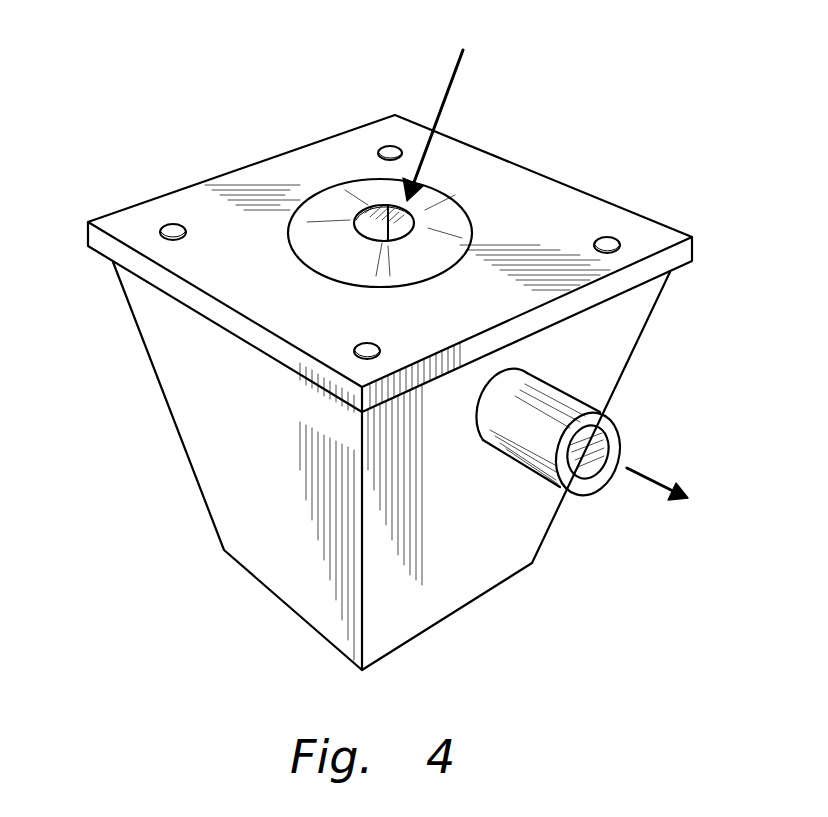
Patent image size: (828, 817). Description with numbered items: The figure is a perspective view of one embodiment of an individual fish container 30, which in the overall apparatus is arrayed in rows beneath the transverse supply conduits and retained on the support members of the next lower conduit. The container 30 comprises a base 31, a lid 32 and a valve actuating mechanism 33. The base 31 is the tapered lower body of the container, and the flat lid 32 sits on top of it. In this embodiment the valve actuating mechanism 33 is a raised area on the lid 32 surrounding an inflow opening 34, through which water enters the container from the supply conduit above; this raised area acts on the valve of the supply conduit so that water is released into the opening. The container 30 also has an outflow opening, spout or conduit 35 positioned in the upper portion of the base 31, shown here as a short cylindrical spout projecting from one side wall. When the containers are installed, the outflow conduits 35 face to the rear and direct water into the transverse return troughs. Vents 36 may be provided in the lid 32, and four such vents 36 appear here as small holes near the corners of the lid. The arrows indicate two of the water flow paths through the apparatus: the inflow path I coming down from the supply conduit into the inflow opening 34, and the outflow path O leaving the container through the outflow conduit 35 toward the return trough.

The individual fish container 30 is at (136, 400).
The base 31 is at (445, 599).
The lid 32 is at (557, 208).
The valve actuating mechanism 33 is at (438, 212).
The inflow opening 34 is at (374, 206).
The outflow opening, spout or conduit 35 is at (583, 485).
The vents 36 is at (160, 227).
The inflow path I is at (448, 83).
The outflow path O is at (643, 470).